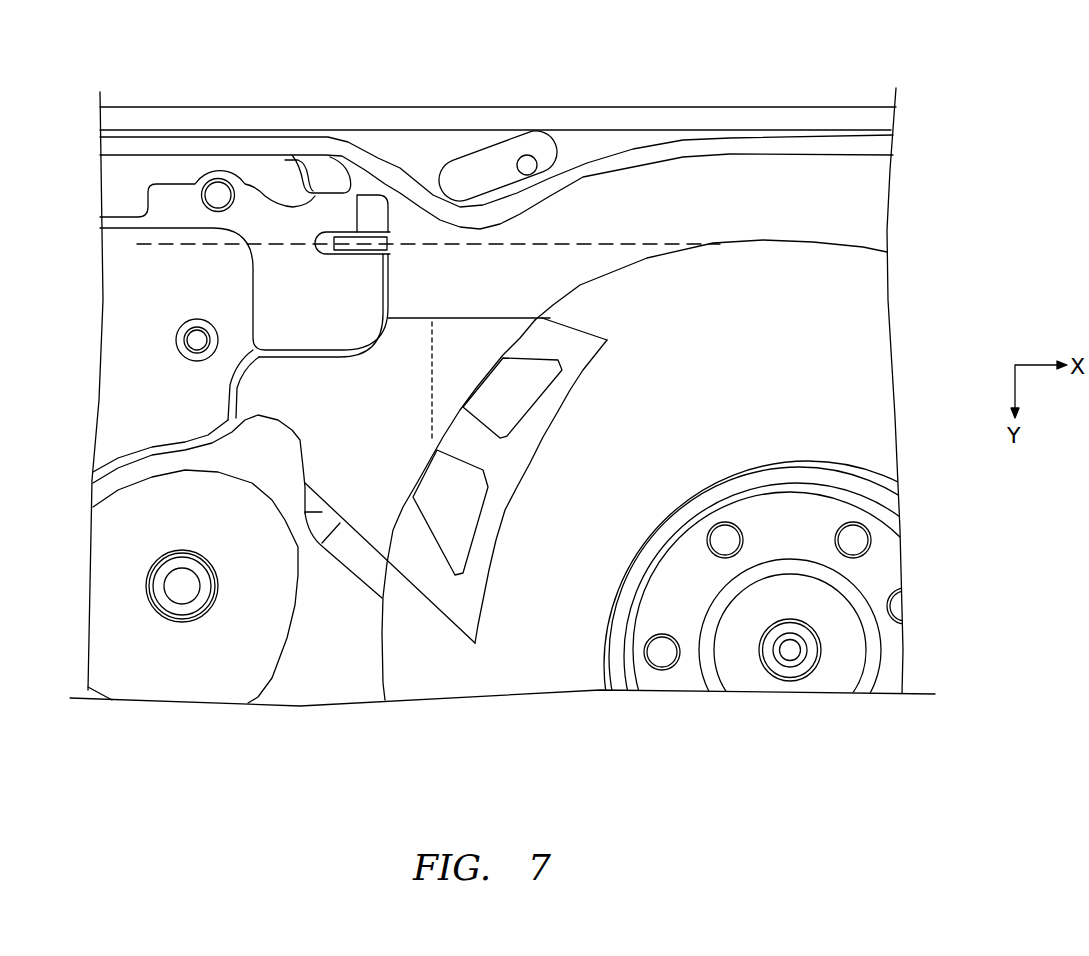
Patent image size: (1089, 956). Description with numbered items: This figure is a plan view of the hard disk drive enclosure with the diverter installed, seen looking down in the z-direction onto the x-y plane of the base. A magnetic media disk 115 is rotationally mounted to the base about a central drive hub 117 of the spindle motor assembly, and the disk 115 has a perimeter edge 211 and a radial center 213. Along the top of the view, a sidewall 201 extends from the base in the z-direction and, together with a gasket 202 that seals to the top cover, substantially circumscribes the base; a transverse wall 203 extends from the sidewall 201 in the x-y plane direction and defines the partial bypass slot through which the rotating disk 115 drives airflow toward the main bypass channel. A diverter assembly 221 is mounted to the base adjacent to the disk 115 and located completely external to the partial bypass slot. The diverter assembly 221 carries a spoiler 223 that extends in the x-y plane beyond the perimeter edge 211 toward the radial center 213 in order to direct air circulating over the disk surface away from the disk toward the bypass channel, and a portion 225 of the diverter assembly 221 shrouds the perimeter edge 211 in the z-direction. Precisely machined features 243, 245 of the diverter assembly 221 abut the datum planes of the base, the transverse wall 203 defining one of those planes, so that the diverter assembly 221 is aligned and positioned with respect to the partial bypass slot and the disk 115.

The magnetic disk 115 is at (878, 328).
The central drive hub 117 is at (890, 583).
The sidewall 201 is at (422, 143).
The gasket 202 is at (253, 143).
The transverse wall 203 is at (428, 160).
The perimeter edge 211 is at (380, 670).
The radial center 213 is at (797, 648).
The diverter assembly 221 is at (518, 304).
The spoiler 223 is at (542, 425).
The portion 225 is at (420, 473).
The feature 243 is at (450, 350).
The feature 245 is at (400, 305).